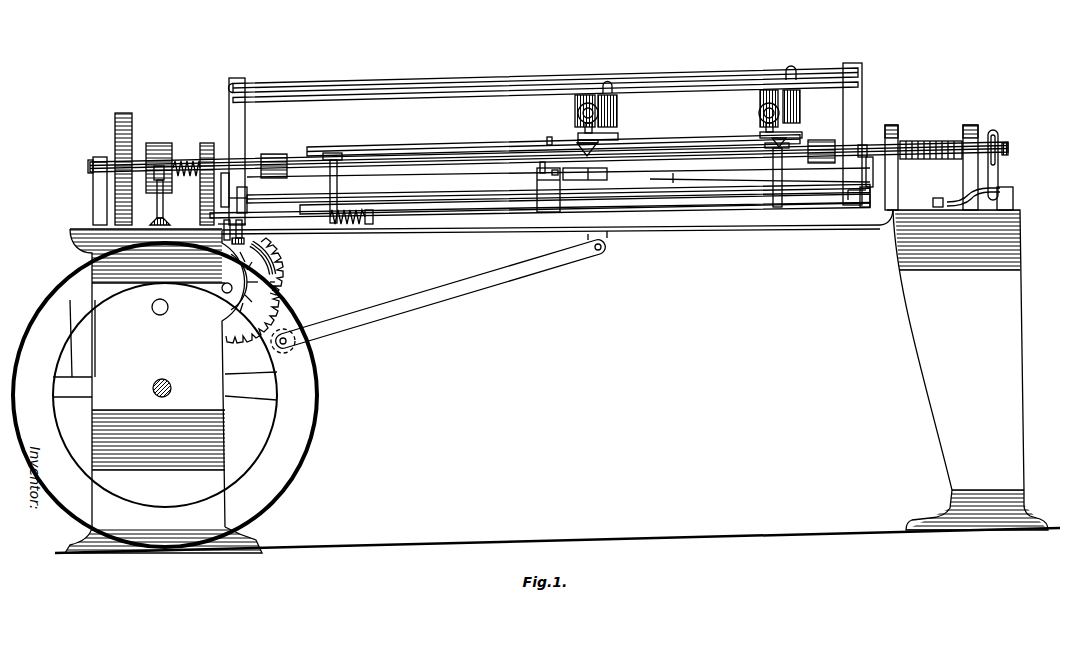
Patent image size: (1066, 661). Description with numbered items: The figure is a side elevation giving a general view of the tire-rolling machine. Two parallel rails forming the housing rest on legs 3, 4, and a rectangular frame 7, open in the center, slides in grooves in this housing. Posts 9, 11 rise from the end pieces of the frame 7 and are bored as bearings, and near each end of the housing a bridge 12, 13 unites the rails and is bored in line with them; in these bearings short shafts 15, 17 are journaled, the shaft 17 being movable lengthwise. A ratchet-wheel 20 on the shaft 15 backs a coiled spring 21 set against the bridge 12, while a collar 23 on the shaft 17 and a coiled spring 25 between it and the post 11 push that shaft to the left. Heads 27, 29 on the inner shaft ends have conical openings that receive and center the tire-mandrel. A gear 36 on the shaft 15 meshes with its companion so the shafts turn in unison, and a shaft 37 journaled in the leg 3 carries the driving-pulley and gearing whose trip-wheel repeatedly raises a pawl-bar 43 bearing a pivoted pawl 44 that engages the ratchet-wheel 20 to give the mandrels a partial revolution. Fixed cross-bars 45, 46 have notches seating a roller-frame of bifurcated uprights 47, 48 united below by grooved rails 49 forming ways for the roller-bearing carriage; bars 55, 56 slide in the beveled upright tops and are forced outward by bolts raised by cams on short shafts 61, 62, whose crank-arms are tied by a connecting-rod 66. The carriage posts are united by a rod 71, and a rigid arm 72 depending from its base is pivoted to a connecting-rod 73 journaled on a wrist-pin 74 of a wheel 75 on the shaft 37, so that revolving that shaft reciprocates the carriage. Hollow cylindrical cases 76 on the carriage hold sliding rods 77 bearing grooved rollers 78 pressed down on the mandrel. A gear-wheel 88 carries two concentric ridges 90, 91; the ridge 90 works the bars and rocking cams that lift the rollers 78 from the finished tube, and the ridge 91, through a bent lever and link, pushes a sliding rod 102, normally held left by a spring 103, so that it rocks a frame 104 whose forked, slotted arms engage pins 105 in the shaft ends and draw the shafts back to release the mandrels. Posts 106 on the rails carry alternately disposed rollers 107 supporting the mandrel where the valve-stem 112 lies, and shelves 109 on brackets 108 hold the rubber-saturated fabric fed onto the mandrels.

The leg 3 is at (163, 391).
The leg 4 is at (967, 370).
The rectangular frame 7 is at (712, 228).
The post 9 is at (93, 190).
The post 11 is at (970, 157).
The bridge 12 is at (205, 174).
The bridge 13 is at (891, 158).
The short shaft 15 is at (251, 160).
The short shaft 17 is at (862, 150).
The ratchet-wheel 20 is at (159, 160).
The coiled spring 21 is at (186, 159).
The collar 23 is at (903, 141).
The coiled spring 25 is at (924, 182).
The head 27 is at (280, 154).
The head 29 is at (821, 142).
The gear 36 is at (124, 158).
The shaft 37 is at (172, 387).
The pawl-bar 43 is at (165, 203).
The pawl 44 is at (156, 180).
The cross-bar 45 is at (250, 232).
The cross-bar 46 is at (850, 208).
The bifurcated upright 47 is at (227, 151).
The bifurcated upright 48 is at (862, 84).
The rail 49 is at (478, 194).
The bar 55 is at (430, 83).
The bar 56 is at (430, 98).
The short shaft 61 is at (229, 192).
The short shaft 62 is at (865, 173).
The connecting-rod 66 is at (686, 177).
The rod 71 is at (689, 162).
The rigid arm 72 is at (618, 178).
The connecting-rod 73 is at (441, 289).
The wrist-pin 74 is at (280, 342).
The wheel 75 is at (318, 378).
The hollow cylindrical case 76 is at (574, 108).
The sliding rod 77 is at (582, 127).
The grooved roller 78 is at (585, 178).
The gear-wheel 88 is at (274, 275).
The ridge 90 is at (281, 284).
The ridge 91 is at (270, 258).
The sliding rod 102 is at (757, 229).
The spring 103 is at (540, 219).
The rocking frame 104 is at (998, 137).
The pin 105 is at (1002, 165).
The post 106 is at (546, 187).
The roller 107 is at (585, 193).
The bracket 108 is at (344, 188).
The shelf 109 is at (553, 141).
The valve-stem 112 is at (540, 133).